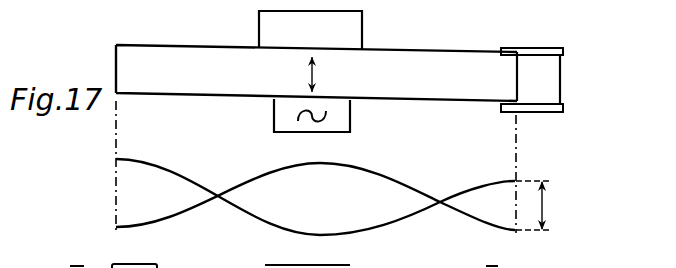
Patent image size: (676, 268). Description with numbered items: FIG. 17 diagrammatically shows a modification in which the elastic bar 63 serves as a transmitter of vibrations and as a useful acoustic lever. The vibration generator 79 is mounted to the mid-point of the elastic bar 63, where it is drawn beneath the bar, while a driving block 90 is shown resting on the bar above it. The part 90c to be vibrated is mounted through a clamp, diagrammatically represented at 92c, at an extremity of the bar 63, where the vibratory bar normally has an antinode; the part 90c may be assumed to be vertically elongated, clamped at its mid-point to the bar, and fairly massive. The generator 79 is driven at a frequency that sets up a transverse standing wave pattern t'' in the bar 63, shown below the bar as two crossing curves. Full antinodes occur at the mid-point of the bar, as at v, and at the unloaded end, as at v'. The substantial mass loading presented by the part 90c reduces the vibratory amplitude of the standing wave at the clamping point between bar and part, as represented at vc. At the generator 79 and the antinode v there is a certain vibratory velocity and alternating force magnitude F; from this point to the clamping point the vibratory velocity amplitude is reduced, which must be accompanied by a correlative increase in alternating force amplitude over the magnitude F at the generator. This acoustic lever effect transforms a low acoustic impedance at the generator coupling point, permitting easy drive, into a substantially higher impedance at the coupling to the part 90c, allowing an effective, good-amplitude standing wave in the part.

The elastic bar 63 is at (159, 51).
The driving element block 90 is at (352, 25).
The vibration generator 79 is at (350, 116).
The part 90c is at (548, 70).
The clamp 92c is at (535, 47).
The alternating force magnitude F is at (314, 74).
The antinode at mid-point of bar v is at (315, 183).
The antinode at unloaded end v' is at (315, 179).
The transverse standing wave pattern t'' is at (231, 238).
The vibratory amplitude at clamping point vc is at (546, 208).